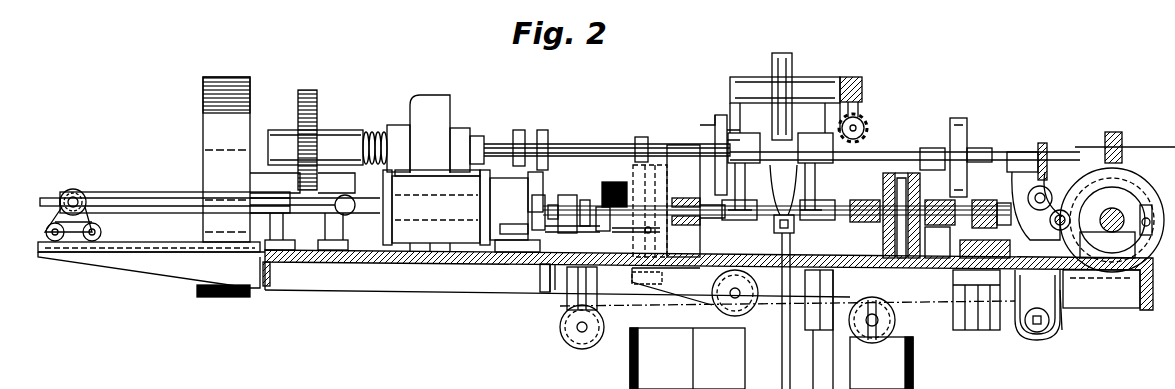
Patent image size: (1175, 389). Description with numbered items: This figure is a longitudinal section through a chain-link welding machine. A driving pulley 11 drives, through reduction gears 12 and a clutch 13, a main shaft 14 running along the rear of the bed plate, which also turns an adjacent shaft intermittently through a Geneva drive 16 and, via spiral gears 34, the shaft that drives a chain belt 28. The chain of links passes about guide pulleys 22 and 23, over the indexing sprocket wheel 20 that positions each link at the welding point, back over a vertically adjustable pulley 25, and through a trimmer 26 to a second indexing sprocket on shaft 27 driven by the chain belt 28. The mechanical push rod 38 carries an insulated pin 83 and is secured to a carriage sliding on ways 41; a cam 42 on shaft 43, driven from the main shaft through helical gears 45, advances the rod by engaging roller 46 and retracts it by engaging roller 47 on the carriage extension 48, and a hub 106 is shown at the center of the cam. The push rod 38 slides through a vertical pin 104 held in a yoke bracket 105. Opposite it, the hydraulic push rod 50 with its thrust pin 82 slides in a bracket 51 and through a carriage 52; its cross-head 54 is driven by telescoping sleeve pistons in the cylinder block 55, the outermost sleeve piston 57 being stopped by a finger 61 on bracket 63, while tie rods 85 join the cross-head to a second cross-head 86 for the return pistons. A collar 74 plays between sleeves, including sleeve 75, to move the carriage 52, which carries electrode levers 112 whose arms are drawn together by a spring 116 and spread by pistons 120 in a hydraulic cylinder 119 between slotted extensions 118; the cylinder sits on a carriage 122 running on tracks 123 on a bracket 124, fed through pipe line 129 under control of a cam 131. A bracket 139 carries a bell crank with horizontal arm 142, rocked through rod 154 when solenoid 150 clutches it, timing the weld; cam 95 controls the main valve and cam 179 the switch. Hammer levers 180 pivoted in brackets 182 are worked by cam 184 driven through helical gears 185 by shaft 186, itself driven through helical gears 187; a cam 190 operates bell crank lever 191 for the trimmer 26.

The driving pulley 11 is at (203, 128).
The reduction gears 12 is at (320, 115).
The clutch 13 is at (424, 100).
The main shaft 14 is at (612, 144).
The Geneva drive 16 is at (740, 105).
The sprocket wheel 20 is at (774, 228).
The guide pulley 22 is at (570, 340).
The guide pulley 23 is at (712, 305).
The vertically adjustable pulley 25 is at (896, 318).
The trimmer 26 is at (958, 318).
The shaft 27 is at (1025, 338).
The chain belt 28 is at (1062, 320).
The spiral gears 34 is at (1042, 143).
The push rod 38 is at (968, 229).
The ways 41 is at (950, 258).
The cam 42 is at (1125, 190).
The shaft 43 is at (1108, 258).
The helical gears 45 is at (1110, 132).
The roller 46 is at (1050, 175).
The roller 47 is at (1148, 205).
The extension 48 is at (1130, 295).
The push rod 50 is at (700, 195).
The bracket 51 is at (668, 258).
The carriage 52 is at (632, 258).
The cross-head 54 is at (512, 178).
The cylinder block 55 is at (436, 214).
The sleeve piston 57 is at (500, 226).
The finger 61 is at (505, 252).
The bracket 63 is at (542, 195).
The collar 74 is at (585, 200).
The adjustable sleeve 75 is at (567, 195).
The thrust pin 82 is at (740, 220).
The pin 83 is at (810, 222).
The tie rods 85 is at (424, 170).
The cross-head 86 is at (383, 228).
The cam 95 is at (542, 130).
The vertical pin 104 is at (905, 190).
The yoke bracket 105 is at (898, 176).
The hub 106 is at (1115, 208).
The levers 112 is at (640, 160).
The spring 116 is at (338, 215).
The slotted extensions 118 is at (180, 192).
The hydraulic cylinder 119 is at (72, 196).
The pistons 120 is at (78, 198).
The carriage 122 is at (78, 236).
The tracks 123 is at (125, 252).
The bracket 124 is at (148, 268).
The pipe line 129 is at (48, 198).
The cam 131 is at (517, 130).
The bracket 139 is at (552, 280).
The horizontal arm 142 is at (535, 262).
The solenoid 150 is at (610, 182).
The rod 154 is at (650, 234).
The cam 179 is at (648, 140).
The hammer levers 180 is at (780, 171).
The brackets 182 is at (718, 125).
The cam 184 is at (795, 72).
The helical gears 185 is at (858, 100).
The shaft 186 is at (862, 100).
The helical gears 187 is at (860, 125).
The cam 190 is at (962, 118).
The bell crank lever 191 is at (980, 148).